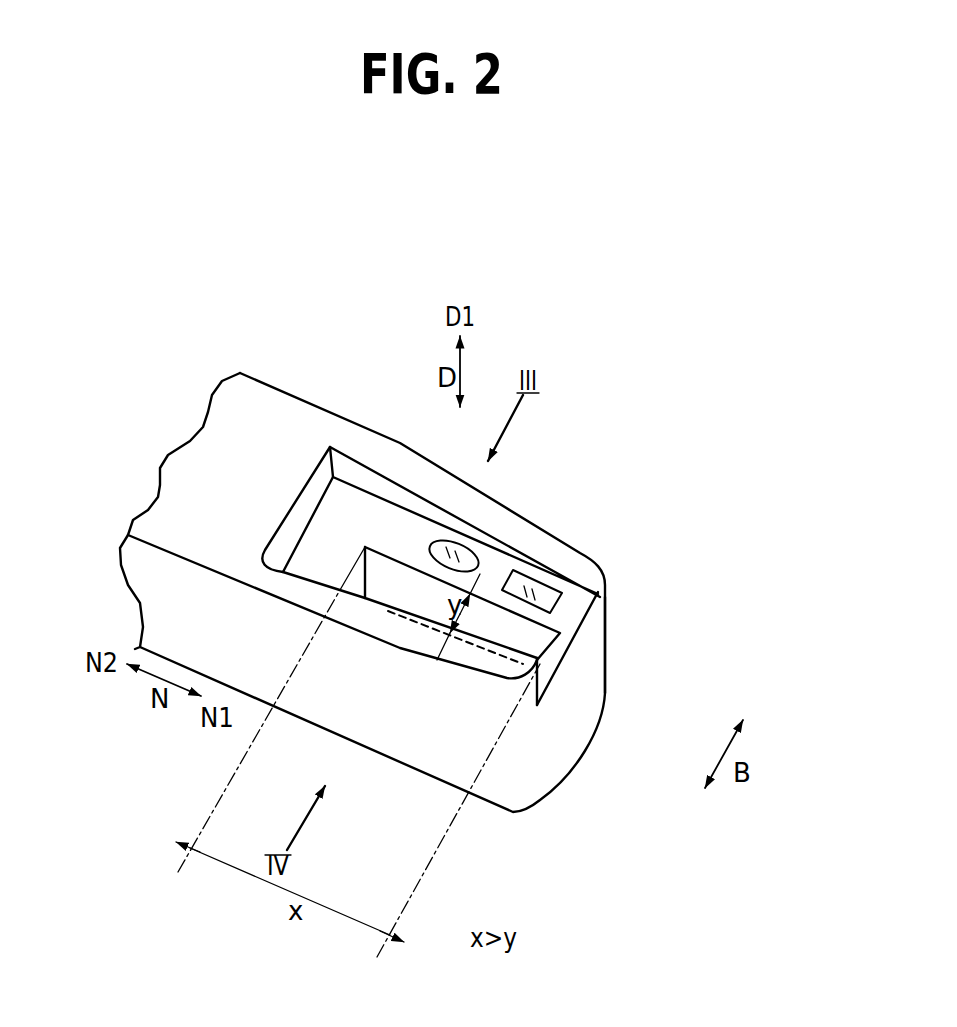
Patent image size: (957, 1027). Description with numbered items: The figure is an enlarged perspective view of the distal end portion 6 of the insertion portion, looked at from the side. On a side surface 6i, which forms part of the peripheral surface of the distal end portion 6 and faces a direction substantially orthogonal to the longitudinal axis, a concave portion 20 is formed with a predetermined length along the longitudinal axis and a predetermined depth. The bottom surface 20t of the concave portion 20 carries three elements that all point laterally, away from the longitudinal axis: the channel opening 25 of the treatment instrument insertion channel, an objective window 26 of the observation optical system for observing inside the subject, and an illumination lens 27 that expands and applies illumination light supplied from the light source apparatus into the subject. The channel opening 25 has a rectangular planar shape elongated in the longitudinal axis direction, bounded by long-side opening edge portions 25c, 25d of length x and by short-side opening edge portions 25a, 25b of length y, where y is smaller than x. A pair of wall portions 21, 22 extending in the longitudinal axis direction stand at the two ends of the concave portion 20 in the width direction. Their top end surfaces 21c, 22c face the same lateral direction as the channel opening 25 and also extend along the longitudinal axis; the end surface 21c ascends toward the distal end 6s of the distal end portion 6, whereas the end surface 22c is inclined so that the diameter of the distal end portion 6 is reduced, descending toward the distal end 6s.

The distal end portion 6 is at (250, 427).
The side surface 6i is at (218, 450).
The distal end 6s is at (590, 703).
The concave portion 20 is at (513, 547).
The bottom surface 20t is at (387, 537).
The wall portion 21 is at (455, 647).
The end surface 21c is at (402, 627).
The wall portion 22 is at (472, 552).
The end surface 22c is at (440, 484).
The channel opening 25 is at (510, 641).
The opening edge portion 25a is at (540, 672).
The opening edge portion 25b is at (362, 598).
The opening edge portion 25c is at (491, 668).
The opening edge portion 25d is at (450, 553).
The objective window 26 is at (480, 562).
The illumination lens 27 is at (548, 602).